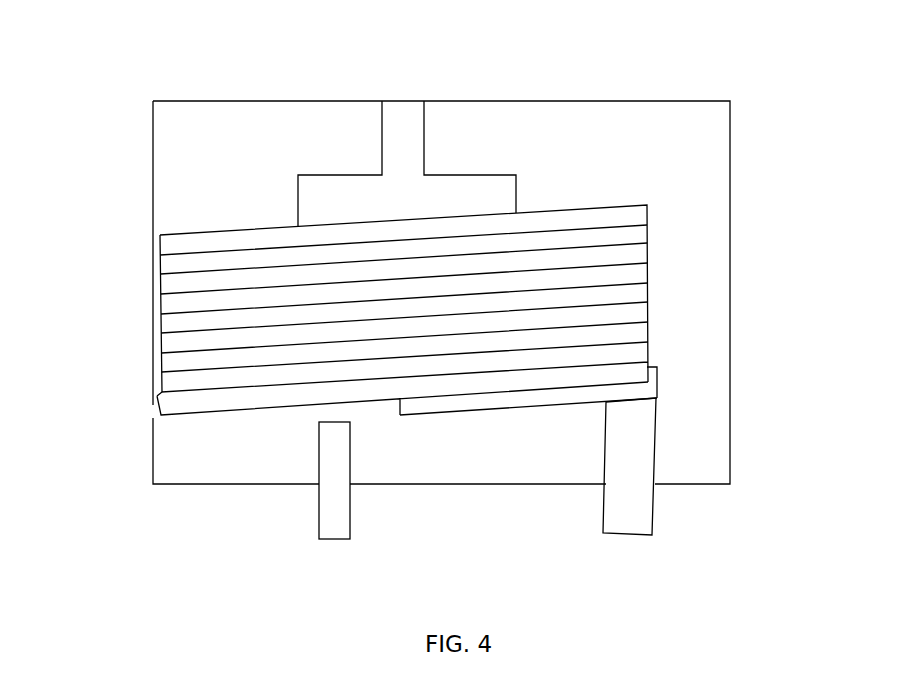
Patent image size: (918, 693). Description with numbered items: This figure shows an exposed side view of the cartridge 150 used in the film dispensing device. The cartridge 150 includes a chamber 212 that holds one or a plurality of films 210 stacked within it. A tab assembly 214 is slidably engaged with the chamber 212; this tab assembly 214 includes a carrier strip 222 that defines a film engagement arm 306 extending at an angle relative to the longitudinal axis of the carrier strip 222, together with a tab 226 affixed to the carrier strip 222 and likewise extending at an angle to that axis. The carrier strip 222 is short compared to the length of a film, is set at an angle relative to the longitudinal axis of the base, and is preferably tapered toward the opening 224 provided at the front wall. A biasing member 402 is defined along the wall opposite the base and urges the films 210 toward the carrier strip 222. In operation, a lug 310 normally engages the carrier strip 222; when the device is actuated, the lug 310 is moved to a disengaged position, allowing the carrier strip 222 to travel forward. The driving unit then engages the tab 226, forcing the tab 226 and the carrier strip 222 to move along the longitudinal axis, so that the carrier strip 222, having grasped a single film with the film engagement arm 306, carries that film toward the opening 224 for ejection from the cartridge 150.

The cartridge 150 is at (730, 117).
The films 210 is at (651, 241).
The chamber 212 is at (563, 142).
The tab assembly 214 is at (673, 403).
The carrier strip 222 is at (517, 410).
The opening 224 is at (152, 408).
The tab 226 is at (652, 518).
The film engagement arm 306 is at (657, 373).
The lug 310 is at (319, 523).
The biasing member 402 is at (382, 125).